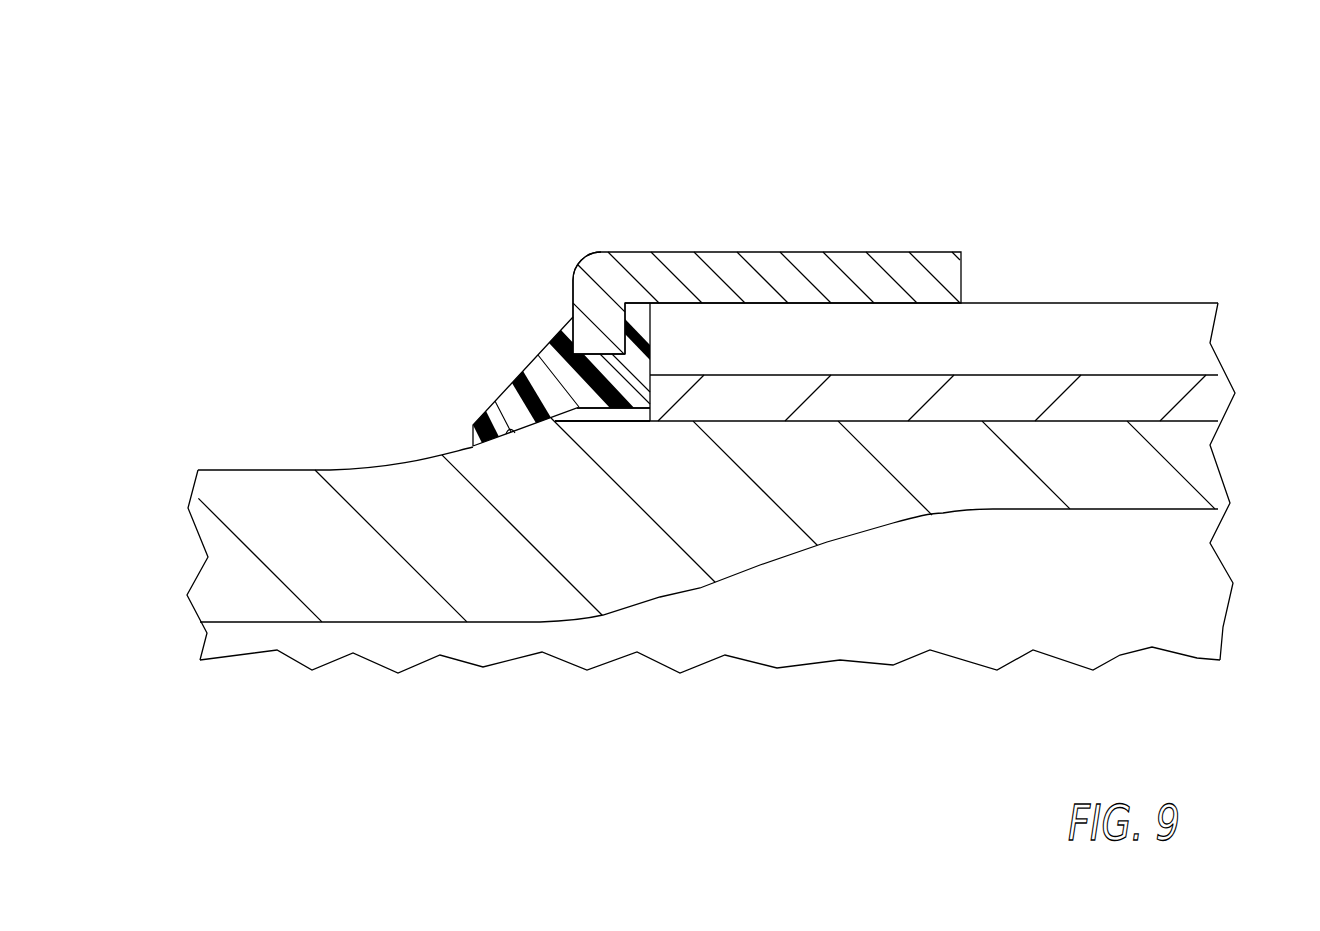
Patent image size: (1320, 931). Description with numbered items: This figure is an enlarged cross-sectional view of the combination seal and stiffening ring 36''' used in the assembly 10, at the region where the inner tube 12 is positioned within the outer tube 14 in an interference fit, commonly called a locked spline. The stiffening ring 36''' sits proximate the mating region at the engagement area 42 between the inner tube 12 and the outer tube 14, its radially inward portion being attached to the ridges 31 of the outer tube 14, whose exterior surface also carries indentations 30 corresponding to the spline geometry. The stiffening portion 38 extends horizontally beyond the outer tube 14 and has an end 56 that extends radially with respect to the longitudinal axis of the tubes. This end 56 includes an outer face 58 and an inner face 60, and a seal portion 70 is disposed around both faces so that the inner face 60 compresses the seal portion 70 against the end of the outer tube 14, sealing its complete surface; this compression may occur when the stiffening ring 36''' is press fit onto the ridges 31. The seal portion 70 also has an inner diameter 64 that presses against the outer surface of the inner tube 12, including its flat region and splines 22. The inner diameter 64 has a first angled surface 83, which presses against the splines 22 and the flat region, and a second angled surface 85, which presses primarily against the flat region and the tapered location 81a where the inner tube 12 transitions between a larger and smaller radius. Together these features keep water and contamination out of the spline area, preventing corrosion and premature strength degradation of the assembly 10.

The assembly 10 is at (138, 205).
The inner tube 12 is at (228, 582).
The outer tube 14 is at (923, 311).
The splines 22 is at (627, 421).
The indentations 30 is at (1178, 378).
The ridges 31 is at (1160, 303).
The stiffening ring 36''' is at (688, 444).
The stiffening portion 38 is at (928, 252).
The engagement area 42 is at (471, 547).
The end 56 is at (715, 233).
The outer face 58 is at (573, 298).
The inner face 60 is at (652, 318).
The inner diameter 64 is at (574, 411).
The seal portion 70 is at (647, 400).
The tapered location 81a is at (515, 433).
The first angled surface 83 is at (497, 397).
The second angled surface 85 is at (498, 440).